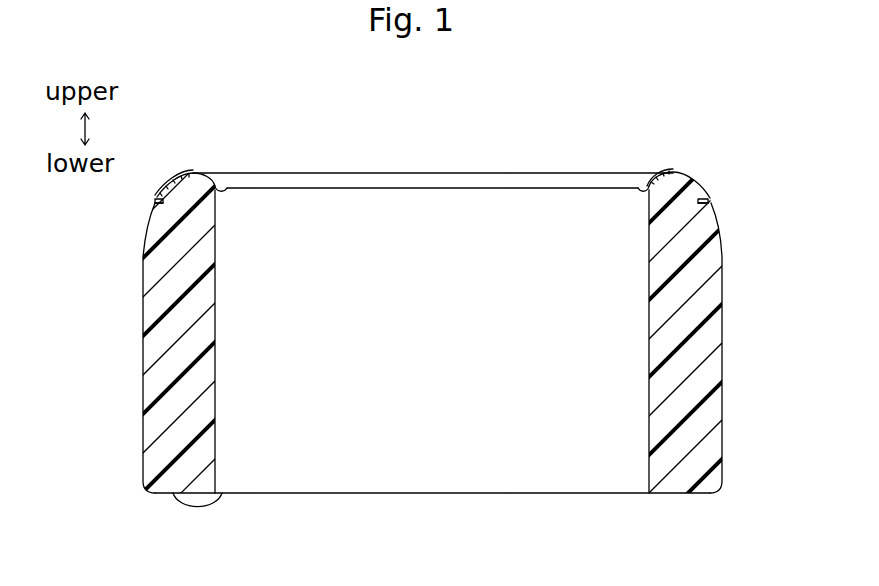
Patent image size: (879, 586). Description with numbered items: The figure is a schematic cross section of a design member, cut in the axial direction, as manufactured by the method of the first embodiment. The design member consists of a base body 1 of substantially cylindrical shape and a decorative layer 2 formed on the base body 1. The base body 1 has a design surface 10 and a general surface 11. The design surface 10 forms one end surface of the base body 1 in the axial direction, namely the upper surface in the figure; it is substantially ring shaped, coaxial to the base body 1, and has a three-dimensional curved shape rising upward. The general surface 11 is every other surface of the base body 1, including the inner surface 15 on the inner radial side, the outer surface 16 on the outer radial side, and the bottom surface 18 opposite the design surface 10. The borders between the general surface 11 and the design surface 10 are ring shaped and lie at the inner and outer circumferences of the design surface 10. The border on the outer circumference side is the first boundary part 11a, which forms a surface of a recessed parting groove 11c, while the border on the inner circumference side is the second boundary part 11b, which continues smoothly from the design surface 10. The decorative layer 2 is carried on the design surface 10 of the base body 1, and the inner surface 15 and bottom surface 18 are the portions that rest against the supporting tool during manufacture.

The base body 1 is at (718, 292).
The decorative layer 2 is at (180, 177).
The design surface 10 is at (197, 173).
The general surface 11 is at (143, 298).
The first boundary part 11a is at (152, 205).
The second boundary part 11b is at (224, 188).
The parting groove 11c is at (157, 200).
The inner surface 15 is at (649, 242).
The outer surface 16 is at (722, 405).
The bottom surface 18 is at (222, 493).